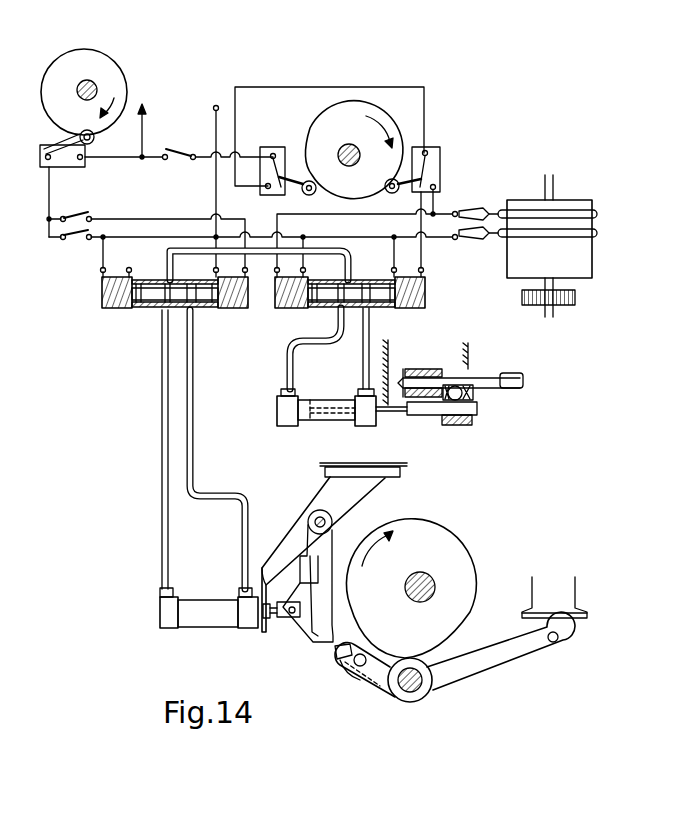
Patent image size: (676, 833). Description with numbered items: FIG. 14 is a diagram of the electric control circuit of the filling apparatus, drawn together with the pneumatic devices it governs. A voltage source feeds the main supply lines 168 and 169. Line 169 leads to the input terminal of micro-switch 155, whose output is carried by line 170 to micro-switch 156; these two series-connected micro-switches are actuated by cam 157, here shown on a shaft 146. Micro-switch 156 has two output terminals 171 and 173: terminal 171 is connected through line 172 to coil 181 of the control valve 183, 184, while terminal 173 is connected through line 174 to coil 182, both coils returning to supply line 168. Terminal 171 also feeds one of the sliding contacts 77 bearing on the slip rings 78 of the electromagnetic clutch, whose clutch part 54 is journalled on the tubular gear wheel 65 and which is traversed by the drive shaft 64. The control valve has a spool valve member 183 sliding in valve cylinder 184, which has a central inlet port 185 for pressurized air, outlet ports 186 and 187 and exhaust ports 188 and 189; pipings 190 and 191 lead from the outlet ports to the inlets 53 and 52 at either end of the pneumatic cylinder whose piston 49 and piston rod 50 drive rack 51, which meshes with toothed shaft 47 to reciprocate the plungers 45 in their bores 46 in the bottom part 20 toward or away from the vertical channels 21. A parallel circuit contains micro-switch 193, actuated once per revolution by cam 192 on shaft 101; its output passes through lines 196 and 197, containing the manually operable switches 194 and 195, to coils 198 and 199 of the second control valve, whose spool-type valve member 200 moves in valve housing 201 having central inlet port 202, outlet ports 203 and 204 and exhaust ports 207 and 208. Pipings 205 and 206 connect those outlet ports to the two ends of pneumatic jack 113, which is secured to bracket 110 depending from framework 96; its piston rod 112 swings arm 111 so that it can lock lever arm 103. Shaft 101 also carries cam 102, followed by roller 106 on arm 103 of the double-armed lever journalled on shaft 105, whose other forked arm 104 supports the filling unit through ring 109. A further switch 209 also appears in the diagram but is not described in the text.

The cam 192 is at (114, 77).
The shaft 101 is at (85, 80).
The micro-switch 193 is at (84, 166).
The main supply line 169 is at (143, 128).
The switch 209 is at (178, 161).
The main supply line 168 is at (215, 130).
The manually operable switch 194 is at (80, 215).
The manually operable switch 195 is at (73, 239).
The line 196 is at (129, 218).
The line 197 is at (102, 258).
The valve cylinder 184 is at (342, 247).
The line 170 is at (275, 87).
The micro-switch 155 is at (273, 152).
The cam 157 is at (387, 128).
The cam shaft 146 is at (348, 144).
The micro-switch 156 is at (430, 148).
The output terminal 171 is at (437, 196).
The line 172 is at (307, 218).
The output terminal 173 is at (413, 193).
The line 174 is at (422, 252).
The sliding contacts 77 is at (479, 232).
The clutch part 54 is at (516, 253).
The slip rings 78 is at (598, 214).
The drive shaft 64 is at (554, 187).
The tubular gear wheel 65 is at (576, 295).
The valve housing 201 is at (166, 250).
The central inlet port 185 is at (348, 259).
The piping 191 is at (287, 343).
The piping 190 is at (363, 358).
The piping 205 is at (162, 360).
The piping 206 is at (188, 360).
The coil 199 is at (102, 309).
The coil 198 is at (243, 308).
The spool-type valve member 200 is at (151, 296).
The exhaust port 207 is at (158, 279).
The exhaust port 208 is at (201, 279).
The outlet port 203 is at (164, 310).
The outlet port 204 is at (194, 308).
The central inlet port 202 is at (186, 318).
The coil 182 is at (427, 280).
The coil 181 is at (291, 304).
The spool valve member 183 is at (319, 292).
The exhaust port 189 is at (333, 278).
The exhaust port 188 is at (393, 267).
The outlet port 186 is at (370, 308).
The outlet port 187 is at (368, 326).
The inlet 52 is at (291, 388).
The piston 49 is at (303, 421).
The inlet 53 is at (358, 391).
The piston rod 50 is at (393, 413).
The rack 51 is at (428, 415).
The bottom part 20 is at (466, 425).
The vertical channel 21 is at (405, 353).
The horizontal cylindrical bore 46 is at (420, 381).
The plunger 45 is at (490, 377).
The toothed shaft 47 is at (465, 398).
The framework 96 is at (372, 464).
The depending bracket 110 is at (367, 491).
The depending arm 111 is at (325, 544).
The pneumatic jack 113 is at (207, 620).
The piston rod 112 is at (273, 620).
The cam 102 is at (467, 556).
The ring 109 is at (530, 612).
The lever arm 104 is at (483, 671).
The shaft 105 is at (417, 694).
The lever arm 103 is at (380, 676).
The rotatable roller 106 is at (348, 673).